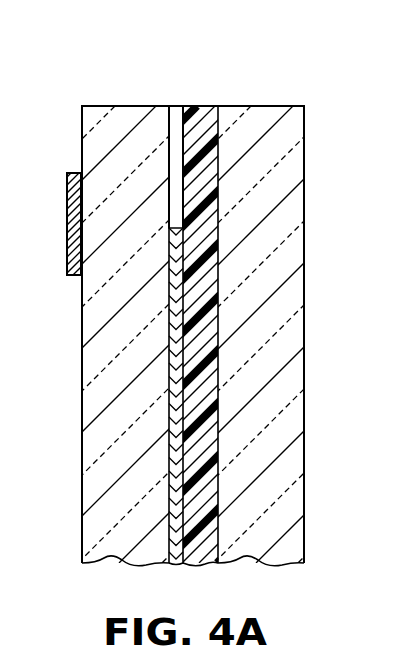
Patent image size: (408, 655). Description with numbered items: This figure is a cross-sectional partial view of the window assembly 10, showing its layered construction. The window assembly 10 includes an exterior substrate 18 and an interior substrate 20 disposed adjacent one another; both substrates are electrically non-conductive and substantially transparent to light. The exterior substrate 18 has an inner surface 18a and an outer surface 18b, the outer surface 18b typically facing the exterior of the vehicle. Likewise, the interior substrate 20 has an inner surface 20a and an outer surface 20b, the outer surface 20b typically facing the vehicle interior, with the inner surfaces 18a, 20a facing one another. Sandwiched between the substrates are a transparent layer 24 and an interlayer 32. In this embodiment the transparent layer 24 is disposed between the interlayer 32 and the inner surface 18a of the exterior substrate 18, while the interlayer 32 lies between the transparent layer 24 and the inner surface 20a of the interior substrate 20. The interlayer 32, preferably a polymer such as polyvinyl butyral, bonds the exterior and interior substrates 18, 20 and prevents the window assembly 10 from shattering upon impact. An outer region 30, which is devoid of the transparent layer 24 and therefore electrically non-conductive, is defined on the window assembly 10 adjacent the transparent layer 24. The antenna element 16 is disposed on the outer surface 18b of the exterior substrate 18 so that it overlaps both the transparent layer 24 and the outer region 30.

The window assembly 10 is at (90, 78).
The antenna element 16 is at (78, 220).
The exterior substrate 18 is at (92, 416).
The inner surface of the exterior substrate 18a is at (170, 121).
The outer surface of the exterior substrate 18b is at (82, 113).
The interior substrate 20 is at (290, 255).
The inner surface of the interior substrate 20a is at (216, 118).
The outer surface of the interior substrate 20b is at (304, 127).
The transparent layer 24 is at (177, 495).
The outer region 30 is at (176, 202).
The interlayer 32 is at (208, 455).